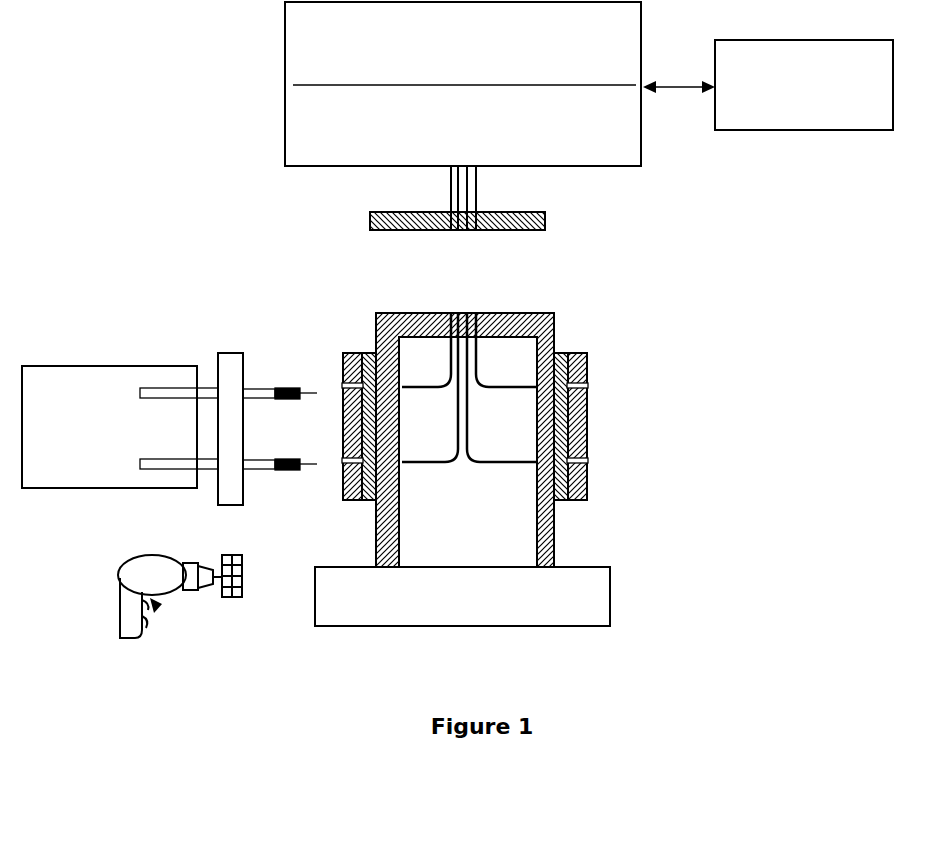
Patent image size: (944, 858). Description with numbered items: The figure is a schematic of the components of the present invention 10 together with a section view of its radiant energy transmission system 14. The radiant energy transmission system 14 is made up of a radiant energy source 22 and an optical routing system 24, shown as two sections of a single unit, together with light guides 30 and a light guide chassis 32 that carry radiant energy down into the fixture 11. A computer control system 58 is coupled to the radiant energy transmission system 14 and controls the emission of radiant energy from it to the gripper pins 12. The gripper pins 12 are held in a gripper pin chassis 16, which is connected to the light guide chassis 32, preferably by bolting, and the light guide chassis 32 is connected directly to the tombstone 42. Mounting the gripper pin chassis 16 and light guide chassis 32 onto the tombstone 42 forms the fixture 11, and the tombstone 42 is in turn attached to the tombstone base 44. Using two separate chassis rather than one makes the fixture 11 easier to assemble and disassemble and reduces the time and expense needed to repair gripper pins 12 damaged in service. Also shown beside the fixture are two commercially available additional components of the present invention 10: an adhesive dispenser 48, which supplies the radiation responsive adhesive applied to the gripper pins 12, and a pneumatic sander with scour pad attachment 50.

The present invention 10 is at (150, 151).
The fixture 11 is at (360, 342).
The gripper pins 12 is at (587, 385).
The radiant energy transmission system 14 is at (276, 124).
The gripper pin chassis 16 is at (587, 480).
The radiant energy source 22 is at (463, 43).
The optical routing system 24 is at (463, 125).
The light guides 30 is at (456, 366).
The light guide chassis 32 is at (560, 350).
The tombstone 42 is at (554, 540).
The tombstone base 44 is at (462, 596).
The adhesive dispenser 48 is at (169, 429).
The pneumatic sander with scour pad attachment 50 is at (117, 628).
The computer control system 58 is at (768, 85).